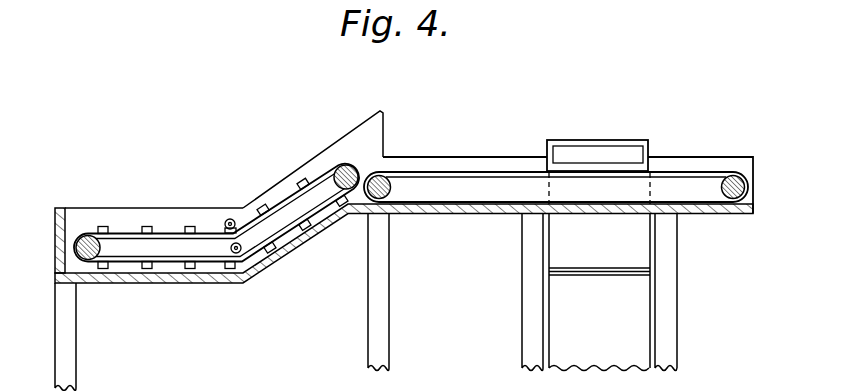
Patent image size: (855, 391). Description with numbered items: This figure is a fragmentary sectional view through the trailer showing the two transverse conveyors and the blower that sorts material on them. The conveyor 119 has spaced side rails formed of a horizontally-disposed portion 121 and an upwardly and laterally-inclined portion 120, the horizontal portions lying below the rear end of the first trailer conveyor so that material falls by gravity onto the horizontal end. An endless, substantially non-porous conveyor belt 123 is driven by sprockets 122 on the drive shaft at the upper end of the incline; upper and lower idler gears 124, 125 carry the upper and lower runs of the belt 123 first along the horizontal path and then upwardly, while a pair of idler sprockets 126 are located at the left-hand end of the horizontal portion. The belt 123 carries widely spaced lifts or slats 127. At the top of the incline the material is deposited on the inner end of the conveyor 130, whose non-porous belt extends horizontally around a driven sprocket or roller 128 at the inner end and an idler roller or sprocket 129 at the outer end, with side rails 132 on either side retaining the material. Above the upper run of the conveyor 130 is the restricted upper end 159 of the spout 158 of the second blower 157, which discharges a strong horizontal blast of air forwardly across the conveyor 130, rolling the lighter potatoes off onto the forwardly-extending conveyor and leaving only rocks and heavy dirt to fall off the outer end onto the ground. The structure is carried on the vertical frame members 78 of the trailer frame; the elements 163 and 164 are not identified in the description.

The vertical frame members 78 is at (75, 363).
The conveyor 119 is at (253, 195).
The upwardly and laterally-inclined portion 120 is at (327, 155).
The horizontally-disposed portion 121 is at (81, 218).
The sprockets 122 is at (348, 167).
The endless conveyor belt 123 is at (293, 187).
The upper idler gear 124 is at (226, 221).
The lower idler gear 125 is at (233, 253).
The idler sprockets 126 is at (90, 253).
The lifts or slats 127 is at (150, 223).
The driven sprocket or roller 128 is at (385, 180).
The idler roller or sprocket 129 is at (730, 180).
The conveyor 130 is at (514, 171).
The side rails 132 is at (460, 162).
The second blower 157 is at (628, 308).
The spout 158 is at (637, 251).
The upper end (nozzle) 159 is at (617, 152).
The end wall 163 is at (55, 210).
The floor plate 164 is at (488, 215).